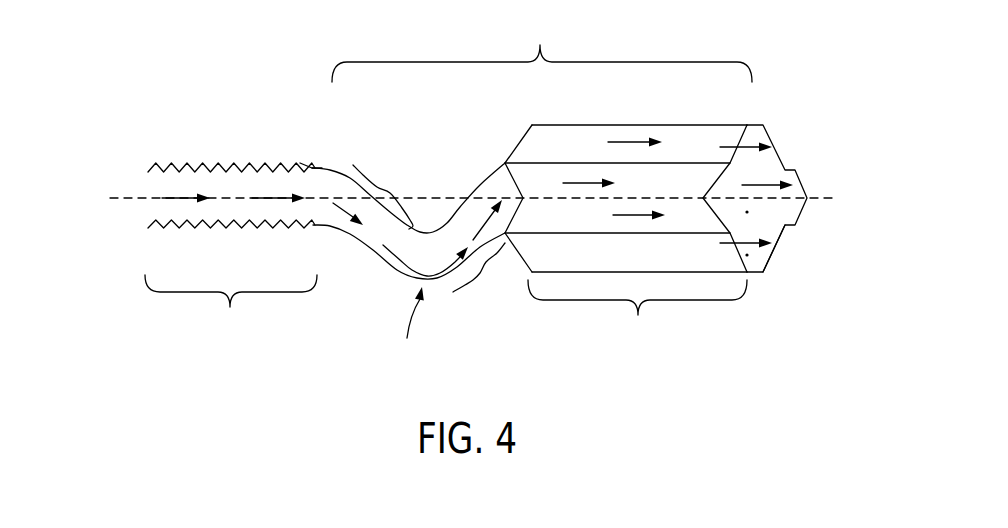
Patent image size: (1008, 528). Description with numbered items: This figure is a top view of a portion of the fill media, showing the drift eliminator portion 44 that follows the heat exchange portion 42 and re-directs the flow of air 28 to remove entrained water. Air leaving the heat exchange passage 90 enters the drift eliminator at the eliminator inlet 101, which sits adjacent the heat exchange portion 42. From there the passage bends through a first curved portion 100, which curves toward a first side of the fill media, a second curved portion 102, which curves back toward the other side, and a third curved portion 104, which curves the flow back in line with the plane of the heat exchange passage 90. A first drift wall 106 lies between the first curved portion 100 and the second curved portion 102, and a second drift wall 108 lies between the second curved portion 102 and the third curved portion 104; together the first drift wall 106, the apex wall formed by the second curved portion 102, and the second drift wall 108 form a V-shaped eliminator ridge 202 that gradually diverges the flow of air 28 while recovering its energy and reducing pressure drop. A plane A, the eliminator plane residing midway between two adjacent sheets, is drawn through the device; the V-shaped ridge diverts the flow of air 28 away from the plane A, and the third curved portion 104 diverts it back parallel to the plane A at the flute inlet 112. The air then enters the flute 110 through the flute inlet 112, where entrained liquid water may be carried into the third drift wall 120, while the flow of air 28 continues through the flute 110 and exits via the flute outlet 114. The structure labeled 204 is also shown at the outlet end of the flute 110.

The plane A is at (123, 197).
The flow of air 28 is at (181, 197).
The heat exchange portion 42 is at (231, 309).
The drift eliminator portion 44 is at (542, 47).
The heat exchange passage 90 is at (237, 197).
The first curved portion 100 is at (326, 168).
The eliminator inlet 101 is at (313, 168).
The second curved portion 102 is at (390, 268).
The third curved portion 104 is at (511, 176).
The first drift wall 106 is at (390, 198).
The second drift wall 108 is at (481, 273).
The flute 110 is at (637, 238).
The flute inlet 112 is at (505, 163).
The flute outlet 114 is at (782, 162).
The third drift wall 120 is at (567, 135).
The eliminator ridge 202 is at (409, 328).
The outlet wall 204 is at (767, 225).